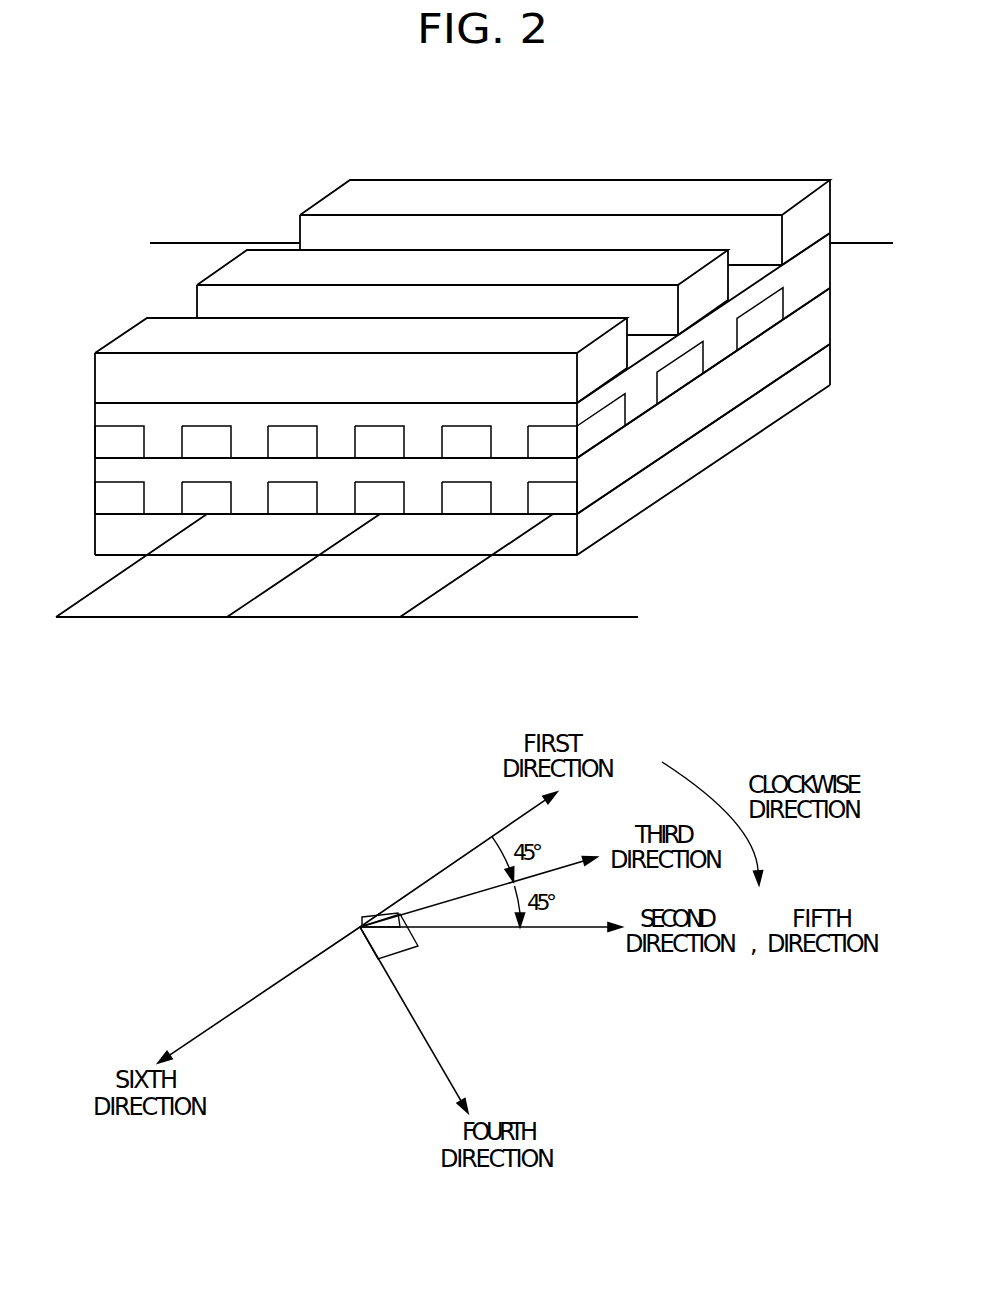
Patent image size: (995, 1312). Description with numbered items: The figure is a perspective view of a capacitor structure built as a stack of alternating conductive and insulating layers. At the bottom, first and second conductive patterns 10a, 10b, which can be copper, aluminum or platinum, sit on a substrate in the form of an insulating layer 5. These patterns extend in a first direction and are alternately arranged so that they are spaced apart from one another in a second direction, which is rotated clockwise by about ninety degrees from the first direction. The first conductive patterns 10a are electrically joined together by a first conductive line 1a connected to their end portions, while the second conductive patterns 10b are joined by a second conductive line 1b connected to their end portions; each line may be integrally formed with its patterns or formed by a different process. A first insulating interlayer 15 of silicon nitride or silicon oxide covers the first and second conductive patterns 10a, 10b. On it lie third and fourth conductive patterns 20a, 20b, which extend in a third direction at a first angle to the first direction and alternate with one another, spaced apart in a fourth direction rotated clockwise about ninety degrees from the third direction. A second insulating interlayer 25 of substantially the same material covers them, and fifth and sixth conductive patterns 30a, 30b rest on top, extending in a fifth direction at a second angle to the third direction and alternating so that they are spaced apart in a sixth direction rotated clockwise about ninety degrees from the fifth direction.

The first conductive line 1a is at (185, 243).
The second conductive line 1b is at (336, 617).
The insulating layer 5 is at (102, 535).
The first insulating interlayer 15 is at (102, 473).
The second insulating interlayer 25 is at (102, 415).
The first conductive patterns 10a is at (138, 511).
The second conductive patterns 10b is at (225, 511).
The third conductive patterns 20a is at (138, 455).
The fourth conductive patterns 20b is at (225, 455).
The fifth conductive patterns 30a is at (462, 291).
The sixth conductive patterns 30b is at (462, 292).